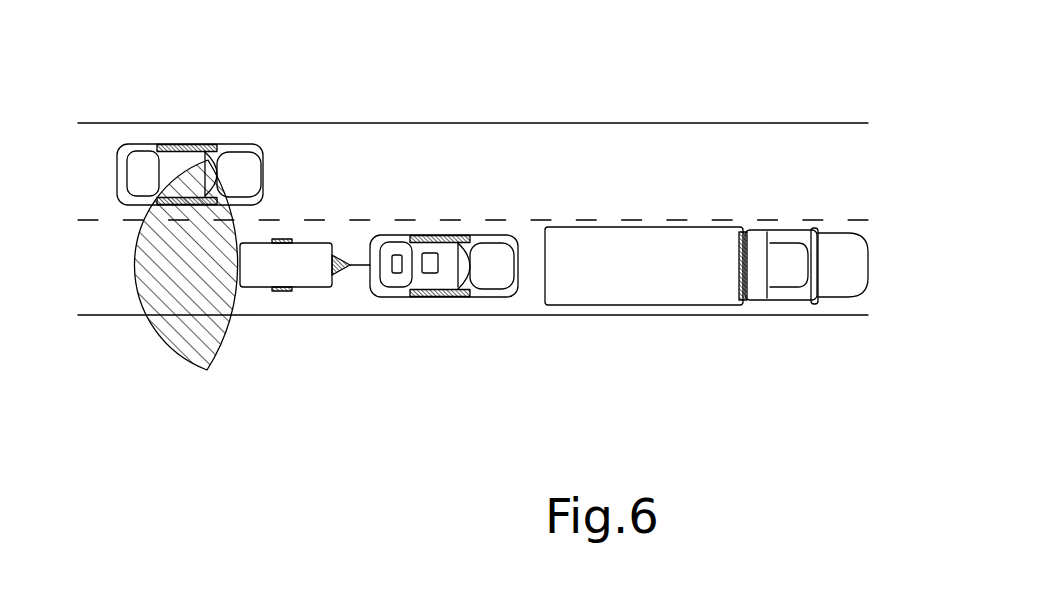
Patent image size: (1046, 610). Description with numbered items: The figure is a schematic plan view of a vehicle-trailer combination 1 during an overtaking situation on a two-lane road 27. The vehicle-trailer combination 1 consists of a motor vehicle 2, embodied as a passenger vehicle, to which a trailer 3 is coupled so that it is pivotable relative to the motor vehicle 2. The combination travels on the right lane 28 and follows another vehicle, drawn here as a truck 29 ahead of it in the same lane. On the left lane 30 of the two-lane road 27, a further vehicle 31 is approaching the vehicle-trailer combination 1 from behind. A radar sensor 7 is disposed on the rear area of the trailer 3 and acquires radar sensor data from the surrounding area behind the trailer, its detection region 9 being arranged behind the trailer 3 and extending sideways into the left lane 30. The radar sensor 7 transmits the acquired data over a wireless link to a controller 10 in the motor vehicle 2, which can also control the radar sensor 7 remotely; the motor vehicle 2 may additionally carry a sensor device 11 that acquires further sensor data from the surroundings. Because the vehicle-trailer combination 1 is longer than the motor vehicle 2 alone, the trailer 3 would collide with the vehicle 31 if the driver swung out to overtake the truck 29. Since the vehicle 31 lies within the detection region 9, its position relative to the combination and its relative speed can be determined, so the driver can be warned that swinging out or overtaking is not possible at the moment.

The vehicle-trailer combination 1 is at (379, 271).
The motor vehicle 2 is at (440, 271).
The trailer 3 is at (305, 289).
The radar sensor 7 is at (237, 280).
The detection region 9 is at (180, 332).
The controller 10 is at (428, 254).
The sensor device 11 is at (395, 258).
The two-lane road 27 is at (701, 148).
The right lane 28 is at (100, 283).
The truck 29 is at (676, 306).
The left lane 30 is at (84, 188).
The further vehicle 31 is at (221, 146).